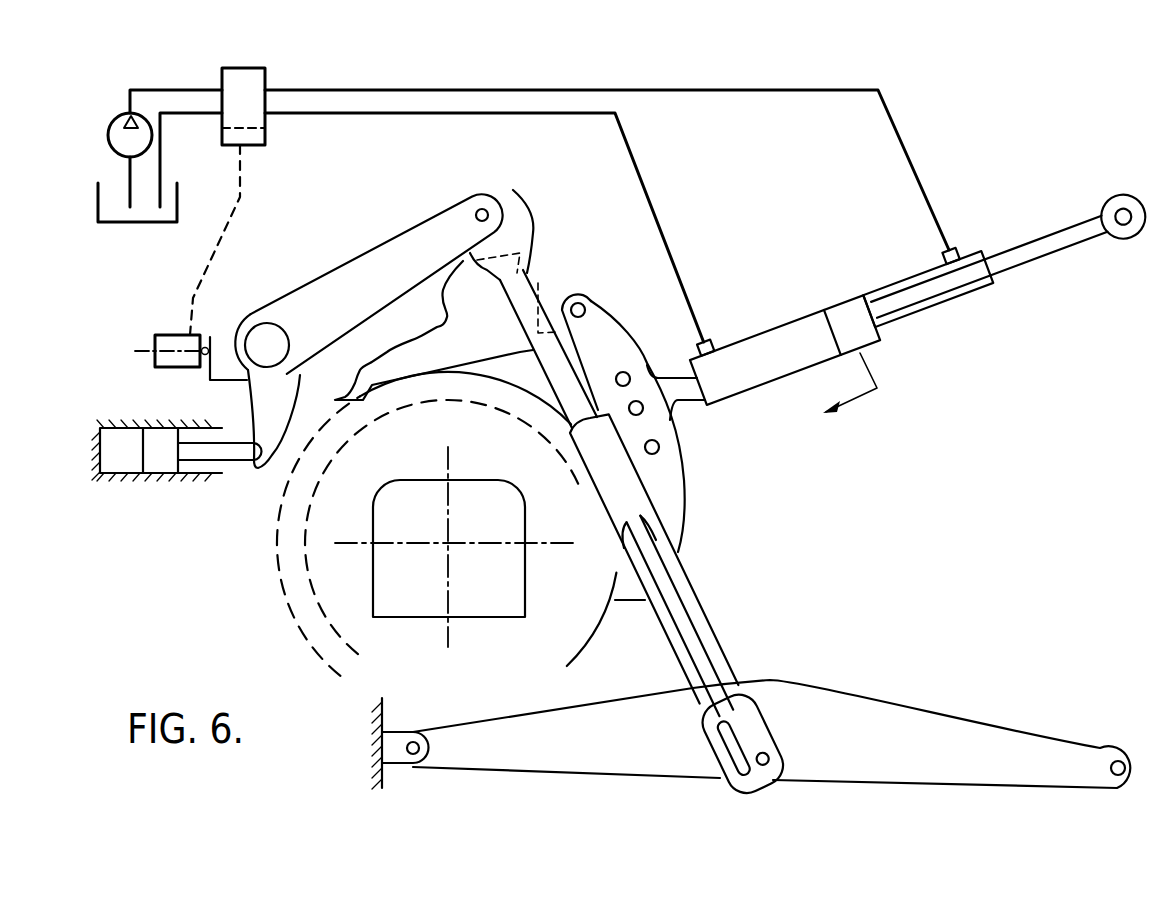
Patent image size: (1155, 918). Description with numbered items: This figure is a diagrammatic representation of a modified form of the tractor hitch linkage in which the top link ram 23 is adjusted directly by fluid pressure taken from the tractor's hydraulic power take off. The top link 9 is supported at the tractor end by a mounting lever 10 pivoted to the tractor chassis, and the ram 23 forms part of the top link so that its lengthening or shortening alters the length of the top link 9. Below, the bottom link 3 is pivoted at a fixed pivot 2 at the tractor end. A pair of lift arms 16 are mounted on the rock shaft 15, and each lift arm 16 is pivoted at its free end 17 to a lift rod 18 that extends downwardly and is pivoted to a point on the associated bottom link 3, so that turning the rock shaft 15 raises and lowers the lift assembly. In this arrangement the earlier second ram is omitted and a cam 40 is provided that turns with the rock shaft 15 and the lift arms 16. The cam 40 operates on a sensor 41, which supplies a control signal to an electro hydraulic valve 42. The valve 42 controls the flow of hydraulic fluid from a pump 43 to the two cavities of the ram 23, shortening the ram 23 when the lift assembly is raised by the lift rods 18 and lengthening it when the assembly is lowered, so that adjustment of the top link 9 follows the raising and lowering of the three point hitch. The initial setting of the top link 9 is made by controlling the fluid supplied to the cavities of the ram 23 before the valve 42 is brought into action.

The pivot 2 is at (408, 732).
The bottom link 3 is at (960, 668).
The top link 9 is at (1007, 260).
The mounting lever 10 is at (622, 342).
The rock shaft 15 is at (270, 323).
The lift arms 16 is at (388, 236).
The free end 17 is at (482, 208).
The lift rod 18 is at (707, 598).
The top link ram 23 is at (920, 303).
The cam 40 is at (218, 335).
The sensor 41 is at (155, 358).
The electro hydraulic valve 42 is at (218, 118).
The pump 43 is at (108, 125).